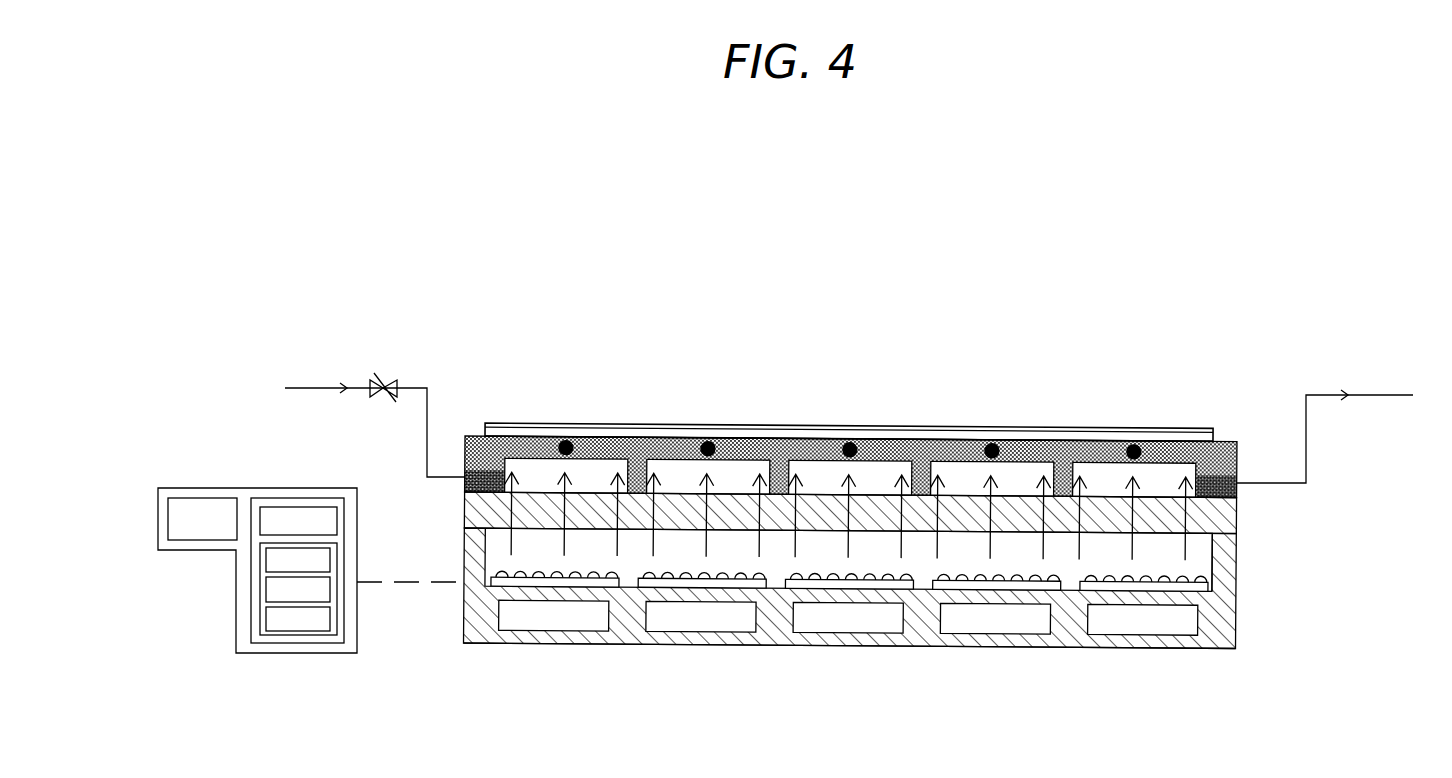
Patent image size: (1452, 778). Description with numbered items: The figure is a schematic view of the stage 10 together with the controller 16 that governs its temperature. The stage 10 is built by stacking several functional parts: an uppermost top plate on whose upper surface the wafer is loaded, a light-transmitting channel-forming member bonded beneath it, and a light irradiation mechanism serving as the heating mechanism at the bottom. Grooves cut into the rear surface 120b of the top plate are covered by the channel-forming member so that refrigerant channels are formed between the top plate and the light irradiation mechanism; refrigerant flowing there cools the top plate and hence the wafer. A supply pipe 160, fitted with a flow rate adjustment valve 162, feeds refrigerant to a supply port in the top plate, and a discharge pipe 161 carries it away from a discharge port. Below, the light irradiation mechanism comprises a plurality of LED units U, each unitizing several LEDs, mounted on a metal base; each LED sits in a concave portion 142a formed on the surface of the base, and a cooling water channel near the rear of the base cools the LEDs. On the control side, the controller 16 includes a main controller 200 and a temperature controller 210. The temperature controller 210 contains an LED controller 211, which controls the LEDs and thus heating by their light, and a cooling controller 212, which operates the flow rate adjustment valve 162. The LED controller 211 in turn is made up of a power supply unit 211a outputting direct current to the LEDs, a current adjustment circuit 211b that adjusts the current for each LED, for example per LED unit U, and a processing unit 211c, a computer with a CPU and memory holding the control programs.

The stage 10 is at (973, 300).
The controller 16 is at (274, 576).
The rear surface of the top plate 120b is at (1238, 488).
The concave portion 142a is at (1218, 542).
The supply pipe 160 is at (312, 388).
The discharge pipe 161 is at (1380, 395).
The flow rate adjustment valve 162 is at (395, 380).
The main controller 200 is at (168, 520).
The temperature controller 210 is at (340, 646).
The LED controller 211 is at (236, 622).
The power supply unit 211a is at (266, 556).
The current adjustment circuit 211b is at (266, 590).
The processing unit 211c is at (266, 620).
The cooling controller 212 is at (293, 507).
The LED unit U is at (1238, 585).